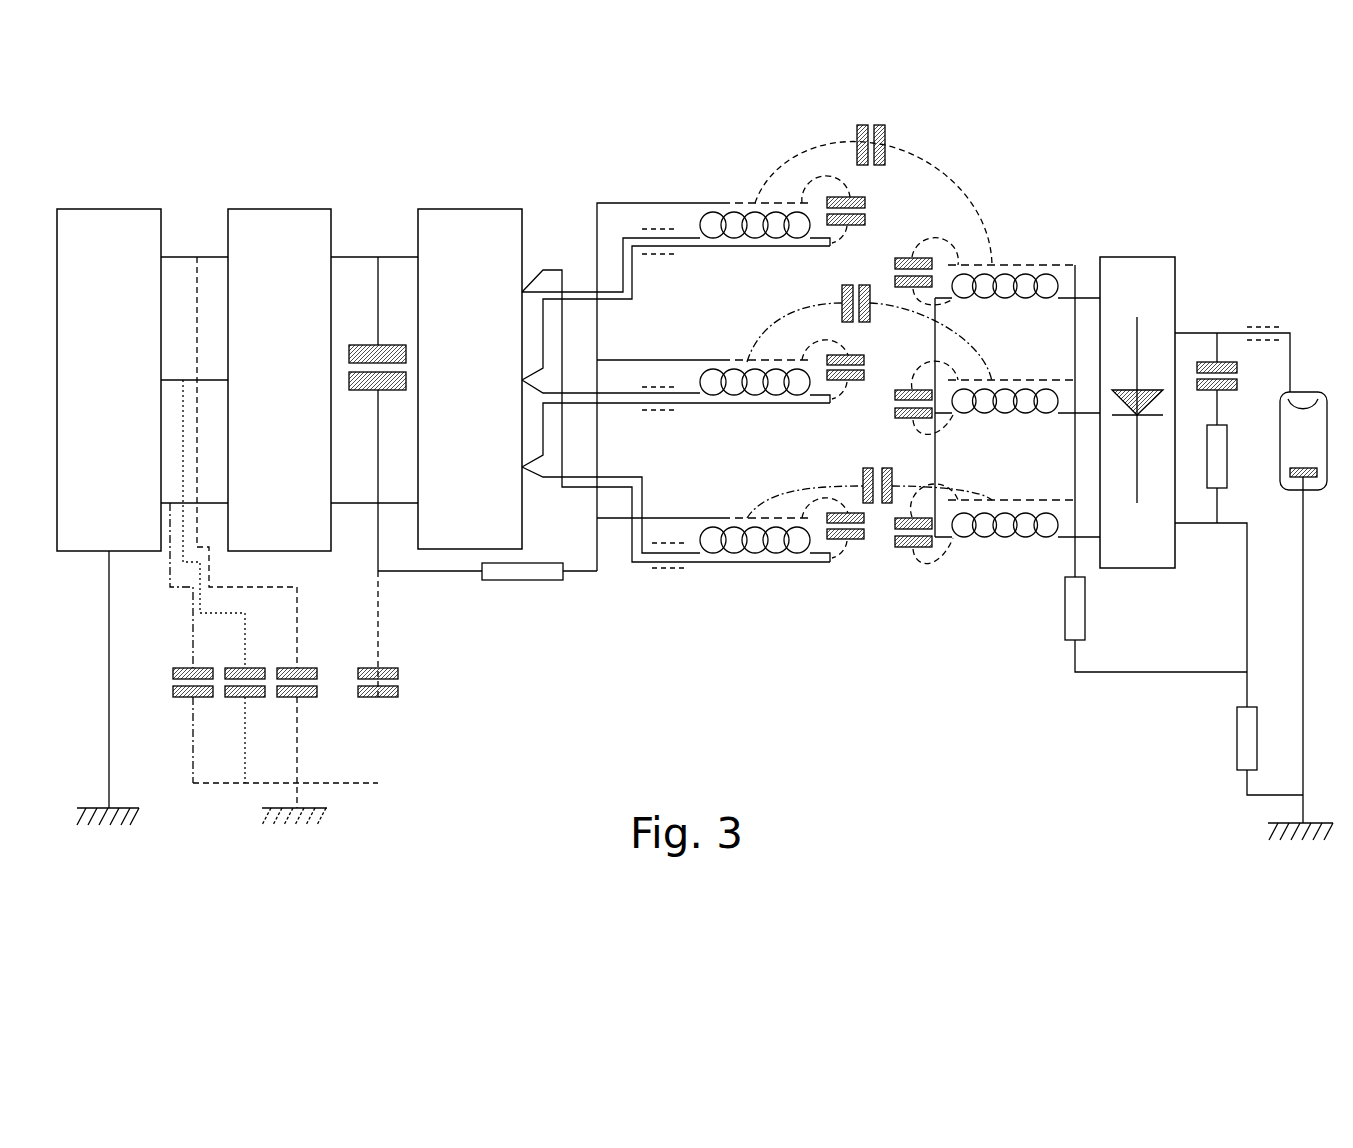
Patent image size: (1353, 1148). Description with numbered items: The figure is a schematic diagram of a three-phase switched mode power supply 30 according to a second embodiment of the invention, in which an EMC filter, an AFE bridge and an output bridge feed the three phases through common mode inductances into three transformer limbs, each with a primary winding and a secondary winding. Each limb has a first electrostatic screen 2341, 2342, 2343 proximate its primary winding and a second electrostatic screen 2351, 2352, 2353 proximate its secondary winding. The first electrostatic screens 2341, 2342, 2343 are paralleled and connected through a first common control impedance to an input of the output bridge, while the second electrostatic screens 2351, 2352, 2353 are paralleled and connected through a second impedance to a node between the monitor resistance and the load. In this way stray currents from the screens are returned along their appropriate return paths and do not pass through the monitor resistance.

The power supply circuit 30 is at (695, 506).
The first electrostatic screen 2341 is at (723, 203).
The first electrostatic screen 2342 is at (723, 360).
The first electrostatic screen 2343 is at (723, 518).
The second electrostatic screen 2351 is at (1008, 265).
The second electrostatic screen 2352 is at (1008, 382).
The second electrostatic screen 2353 is at (1010, 500).